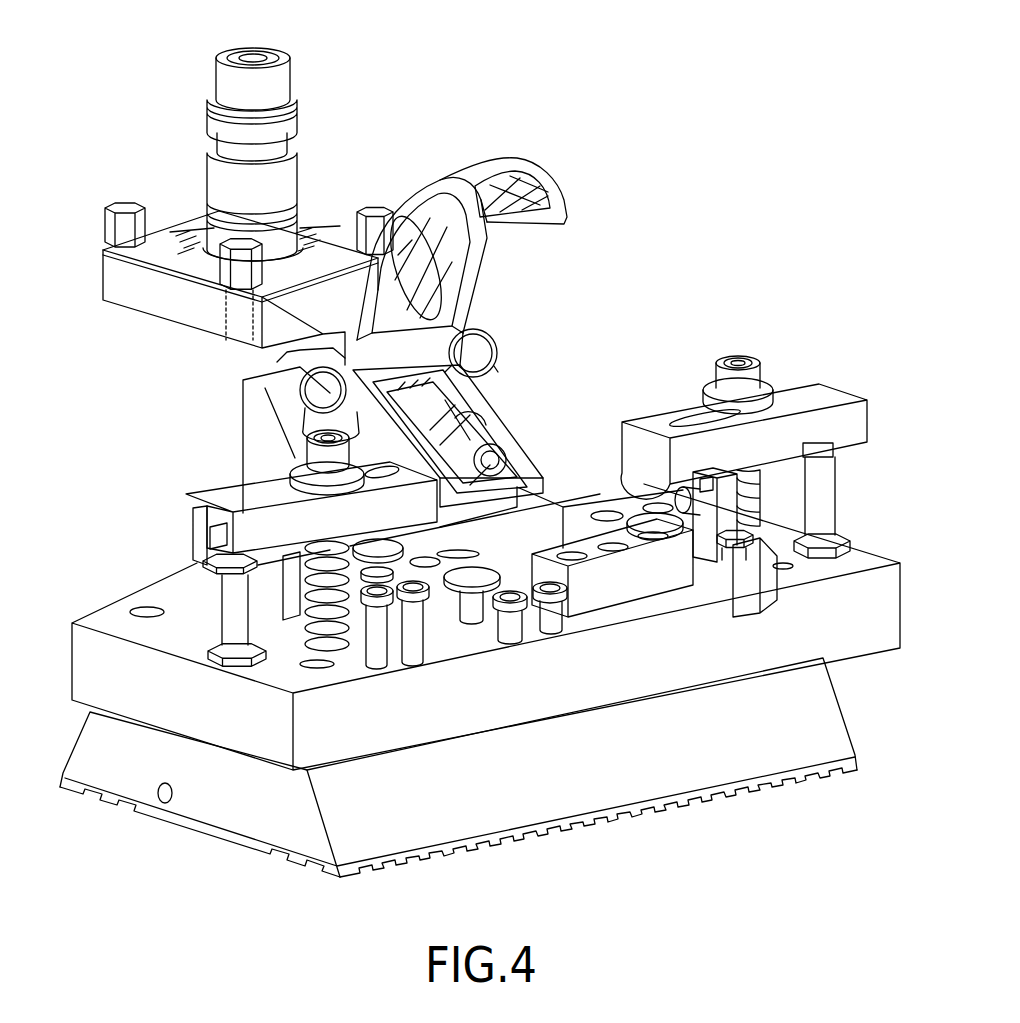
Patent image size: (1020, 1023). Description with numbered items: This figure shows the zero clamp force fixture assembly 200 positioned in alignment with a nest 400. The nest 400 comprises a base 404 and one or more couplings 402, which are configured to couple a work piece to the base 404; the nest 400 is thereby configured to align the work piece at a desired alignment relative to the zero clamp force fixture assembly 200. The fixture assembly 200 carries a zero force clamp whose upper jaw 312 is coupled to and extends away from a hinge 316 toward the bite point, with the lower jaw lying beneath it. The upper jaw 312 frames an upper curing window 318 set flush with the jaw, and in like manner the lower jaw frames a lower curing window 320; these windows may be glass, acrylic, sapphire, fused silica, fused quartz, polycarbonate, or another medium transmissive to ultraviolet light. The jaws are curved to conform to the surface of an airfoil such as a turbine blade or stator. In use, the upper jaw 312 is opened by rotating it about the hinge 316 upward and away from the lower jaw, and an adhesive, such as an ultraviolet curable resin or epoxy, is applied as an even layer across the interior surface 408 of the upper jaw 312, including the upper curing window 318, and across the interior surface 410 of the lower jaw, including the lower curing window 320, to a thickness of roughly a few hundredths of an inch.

The zero clamp force fixture assembly 200 is at (369, 86).
The upper jaw 312 is at (519, 163).
The upper curing window 318 is at (530, 193).
The interior surface of upper jaw 408 is at (440, 267).
The interior surface of lower jaw 410 is at (497, 380).
The lower curing window 320 is at (488, 448).
The couplings 402 is at (252, 467).
The hinge 316 is at (290, 355).
The nest 400 is at (150, 563).
The base 404 is at (540, 766).